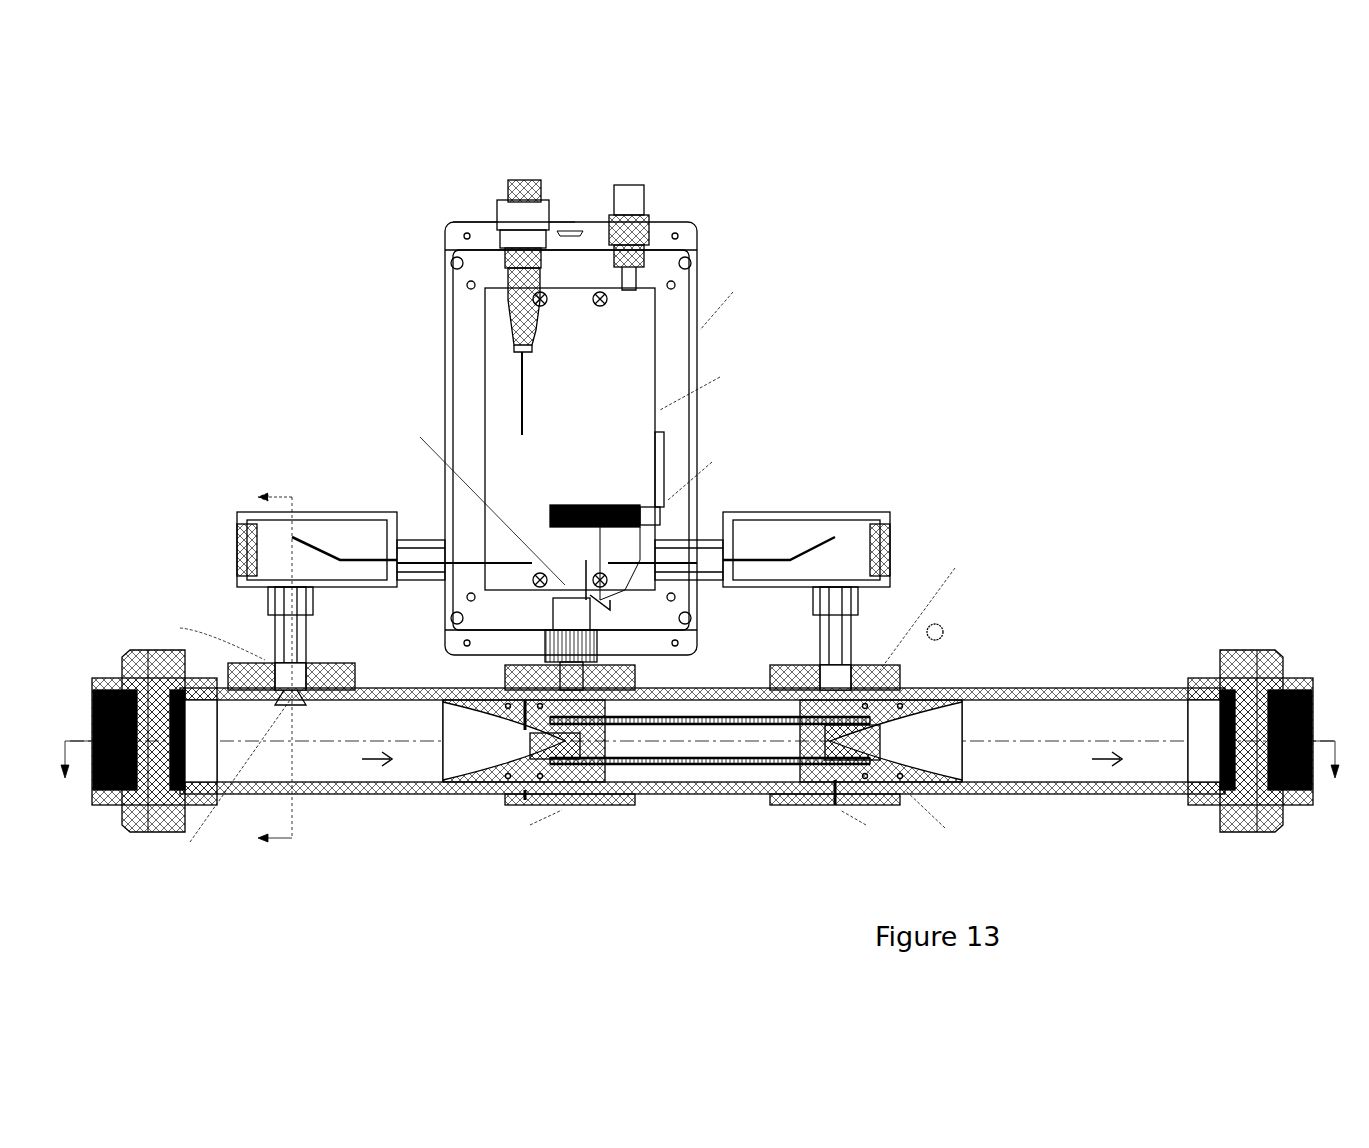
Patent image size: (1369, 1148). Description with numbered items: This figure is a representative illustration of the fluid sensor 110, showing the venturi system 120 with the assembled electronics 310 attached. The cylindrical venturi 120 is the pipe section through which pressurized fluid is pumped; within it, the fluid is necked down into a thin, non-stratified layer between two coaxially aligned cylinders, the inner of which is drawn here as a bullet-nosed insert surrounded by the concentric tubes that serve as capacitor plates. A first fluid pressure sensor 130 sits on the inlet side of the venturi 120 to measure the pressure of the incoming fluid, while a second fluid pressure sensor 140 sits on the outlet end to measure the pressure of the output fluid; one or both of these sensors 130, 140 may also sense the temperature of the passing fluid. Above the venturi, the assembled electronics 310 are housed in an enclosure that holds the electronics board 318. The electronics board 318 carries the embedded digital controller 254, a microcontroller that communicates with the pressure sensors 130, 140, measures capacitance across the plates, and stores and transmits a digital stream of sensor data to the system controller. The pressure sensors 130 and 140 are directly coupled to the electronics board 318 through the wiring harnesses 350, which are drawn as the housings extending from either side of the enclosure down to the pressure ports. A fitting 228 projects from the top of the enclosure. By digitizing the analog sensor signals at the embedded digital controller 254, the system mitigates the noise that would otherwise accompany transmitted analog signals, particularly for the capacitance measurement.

The fluid sensor 110 is at (700, 502).
The cylindrical venturi 120 is at (962, 855).
The first fluid pressure sensor 130 is at (265, 640).
The second fluid pressure sensor 140 is at (852, 685).
The sensor fitting 228 is at (505, 192).
The embedded digital controller 254 is at (616, 505).
The assembled electronics 310 is at (237, 485).
The electronics board 318 is at (487, 338).
The wiring harnesses 350 is at (357, 560).